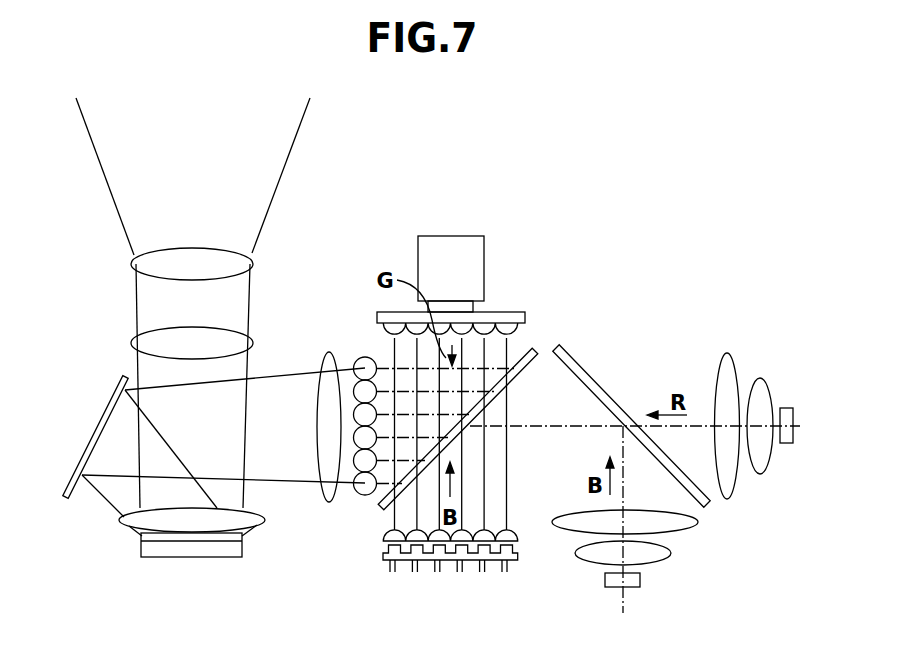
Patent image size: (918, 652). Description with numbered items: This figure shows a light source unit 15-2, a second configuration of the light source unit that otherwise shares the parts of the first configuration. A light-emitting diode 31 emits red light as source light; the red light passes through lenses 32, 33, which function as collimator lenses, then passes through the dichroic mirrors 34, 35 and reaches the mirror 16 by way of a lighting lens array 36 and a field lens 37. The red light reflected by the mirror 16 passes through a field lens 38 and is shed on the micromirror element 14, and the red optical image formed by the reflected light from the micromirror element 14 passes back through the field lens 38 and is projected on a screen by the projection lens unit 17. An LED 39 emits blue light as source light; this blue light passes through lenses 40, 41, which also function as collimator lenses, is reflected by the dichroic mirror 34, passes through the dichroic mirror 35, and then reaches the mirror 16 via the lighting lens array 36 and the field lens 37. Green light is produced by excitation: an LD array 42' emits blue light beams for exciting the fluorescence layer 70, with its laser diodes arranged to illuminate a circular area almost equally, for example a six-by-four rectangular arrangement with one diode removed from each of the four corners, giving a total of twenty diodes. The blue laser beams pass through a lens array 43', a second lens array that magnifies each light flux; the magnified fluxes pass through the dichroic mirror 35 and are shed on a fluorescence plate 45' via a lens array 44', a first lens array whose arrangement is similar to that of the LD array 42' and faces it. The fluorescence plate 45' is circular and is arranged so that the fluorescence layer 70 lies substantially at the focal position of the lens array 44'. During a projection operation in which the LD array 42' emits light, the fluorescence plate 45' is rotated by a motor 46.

The micromirror element 14 is at (195, 557).
The light source unit 15-2 is at (637, 252).
The mirror 16 is at (98, 425).
The projection lens unit 17 is at (118, 249).
The light-emitting diode 31 is at (787, 408).
The lens 32 is at (760, 378).
The lens 33 is at (727, 353).
The dichroic mirror 34 is at (603, 383).
The dichroic mirror 35 is at (527, 387).
The lighting lens array 36 is at (363, 358).
The field lens 37 is at (319, 362).
The field lens 38 is at (267, 520).
The LED 39 is at (640, 580).
The lens 40 is at (672, 555).
The lens 41 is at (700, 522).
The LD array 42' is at (450, 580).
The lens array 43' is at (419, 546).
The lens array 44' is at (498, 326).
The fluorescence plate 45' is at (459, 287).
The motor 46 is at (451, 235).
The fluorescence layer 70 is at (523, 327).